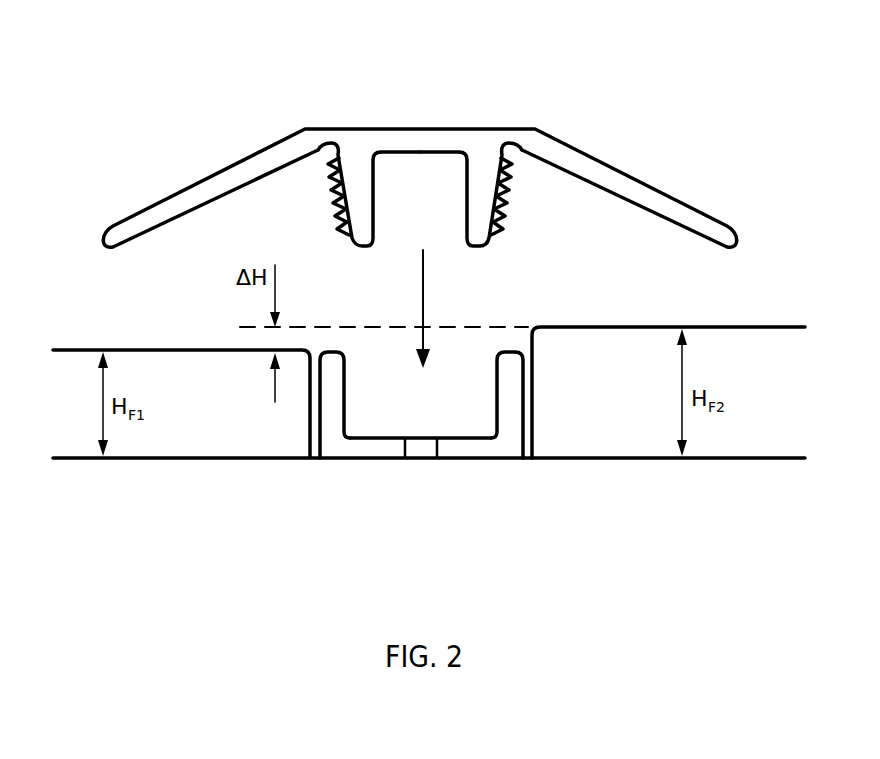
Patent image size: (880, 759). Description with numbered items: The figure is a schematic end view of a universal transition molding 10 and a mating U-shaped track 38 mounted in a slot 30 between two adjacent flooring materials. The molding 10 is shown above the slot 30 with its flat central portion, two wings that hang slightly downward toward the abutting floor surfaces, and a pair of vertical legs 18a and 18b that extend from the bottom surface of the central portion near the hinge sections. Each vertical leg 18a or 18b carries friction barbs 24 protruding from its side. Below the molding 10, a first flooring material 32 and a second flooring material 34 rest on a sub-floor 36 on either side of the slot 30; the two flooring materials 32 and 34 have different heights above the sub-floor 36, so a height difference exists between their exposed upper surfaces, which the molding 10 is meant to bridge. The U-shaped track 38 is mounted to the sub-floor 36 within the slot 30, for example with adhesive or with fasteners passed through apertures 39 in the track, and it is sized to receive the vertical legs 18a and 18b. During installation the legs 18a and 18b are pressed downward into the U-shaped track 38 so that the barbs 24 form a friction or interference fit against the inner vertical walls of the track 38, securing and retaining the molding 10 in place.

The universal transition molding 10 is at (246, 64).
The vertical leg 18a is at (376, 192).
The vertical leg 18b is at (482, 248).
The friction barbs 24 is at (340, 198).
The slot 30 is at (416, 399).
The first flooring material 32 is at (226, 413).
The second flooring material 34 is at (613, 406).
The sub-floor 36 is at (317, 459).
The U-shaped track 38 is at (382, 447).
The apertures 39 is at (440, 446).